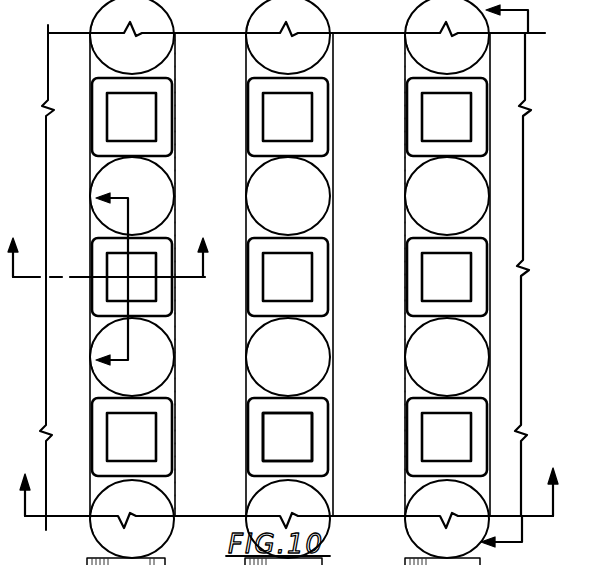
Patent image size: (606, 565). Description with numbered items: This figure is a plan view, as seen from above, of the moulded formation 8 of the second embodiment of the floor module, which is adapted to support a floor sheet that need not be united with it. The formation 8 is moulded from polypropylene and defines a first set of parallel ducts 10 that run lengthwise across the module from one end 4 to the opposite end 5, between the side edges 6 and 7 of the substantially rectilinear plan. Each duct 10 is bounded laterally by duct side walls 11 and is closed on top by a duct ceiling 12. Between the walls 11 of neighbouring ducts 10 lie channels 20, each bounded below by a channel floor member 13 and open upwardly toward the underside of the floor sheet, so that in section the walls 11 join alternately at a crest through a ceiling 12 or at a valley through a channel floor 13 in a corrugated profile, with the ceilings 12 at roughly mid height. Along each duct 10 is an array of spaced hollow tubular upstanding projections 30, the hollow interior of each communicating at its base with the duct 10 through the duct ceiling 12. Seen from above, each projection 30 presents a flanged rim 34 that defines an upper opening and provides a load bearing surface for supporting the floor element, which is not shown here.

The end edge 4 is at (214, 518).
The end edge 5 is at (216, 33).
The side edge 6 is at (45, 322).
The side edge 7 is at (527, 318).
The formation 8 is at (528, 80).
The duct 10 is at (289, 277).
The duct side wall 11 is at (90, 122).
The duct ceiling 12 is at (390, 192).
The channel floor member 13 is at (91, 281).
The channel 20 is at (290, 275).
The upstanding projection 30 is at (244, 124).
The flanged rim 34 is at (300, 437).